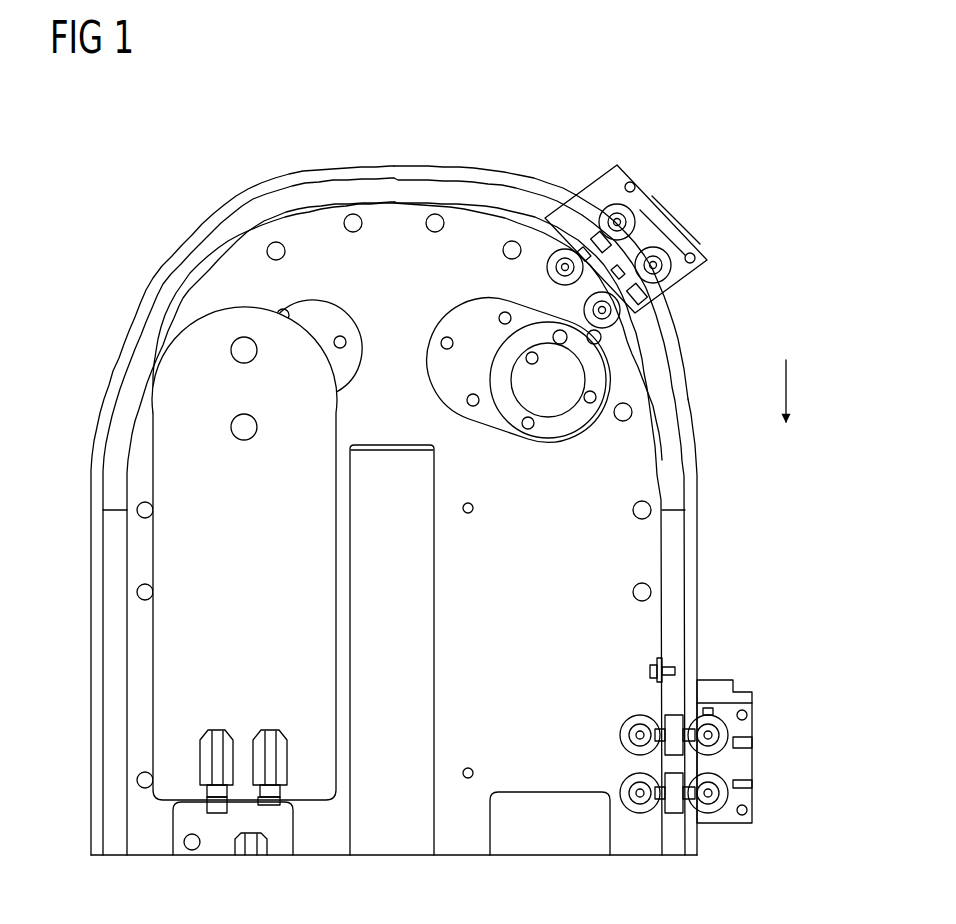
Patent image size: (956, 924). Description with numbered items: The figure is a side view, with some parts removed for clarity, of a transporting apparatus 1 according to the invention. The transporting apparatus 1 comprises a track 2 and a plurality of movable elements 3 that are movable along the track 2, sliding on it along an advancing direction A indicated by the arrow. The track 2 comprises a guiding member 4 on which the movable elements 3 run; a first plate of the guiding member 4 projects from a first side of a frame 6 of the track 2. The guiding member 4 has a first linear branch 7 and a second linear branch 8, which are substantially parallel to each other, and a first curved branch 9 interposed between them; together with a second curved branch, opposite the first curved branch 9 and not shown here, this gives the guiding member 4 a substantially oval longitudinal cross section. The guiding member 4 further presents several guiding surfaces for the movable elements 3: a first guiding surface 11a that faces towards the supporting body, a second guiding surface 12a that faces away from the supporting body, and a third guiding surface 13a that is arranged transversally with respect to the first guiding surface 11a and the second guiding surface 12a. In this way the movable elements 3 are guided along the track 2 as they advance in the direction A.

The transporting apparatus 1 is at (480, 156).
The track 2 is at (214, 184).
The movable elements 3 is at (670, 179).
The guiding member 4 is at (667, 397).
The frame 6 is at (440, 605).
The first linear branch 7 is at (695, 583).
The second linear branch 8 is at (95, 612).
The first curved branch 9 is at (346, 167).
The first guiding surface 11a is at (677, 326).
The second guiding surface 12a is at (645, 405).
The third guiding surface 13a is at (676, 456).
The advancing direction A is at (787, 385).